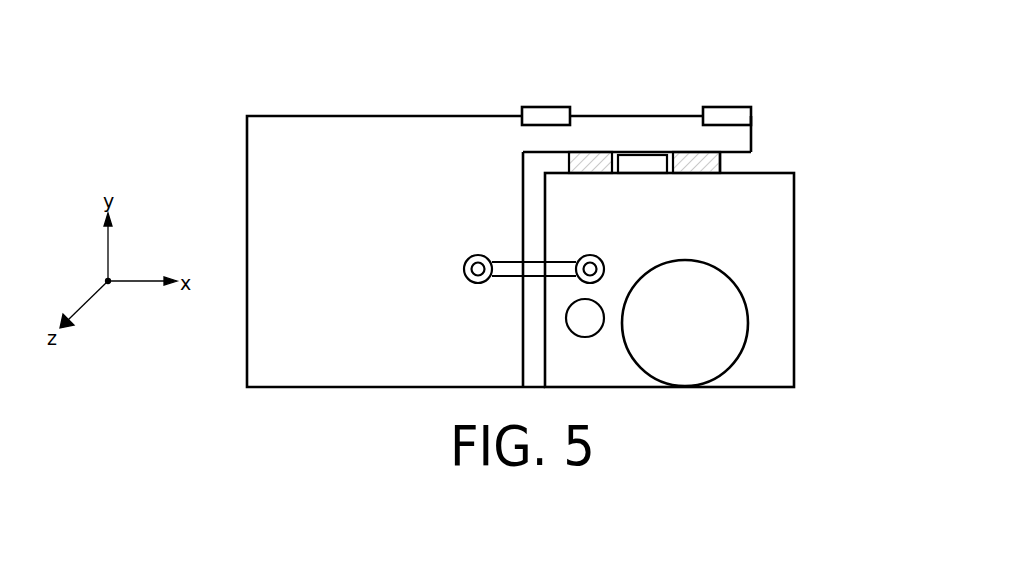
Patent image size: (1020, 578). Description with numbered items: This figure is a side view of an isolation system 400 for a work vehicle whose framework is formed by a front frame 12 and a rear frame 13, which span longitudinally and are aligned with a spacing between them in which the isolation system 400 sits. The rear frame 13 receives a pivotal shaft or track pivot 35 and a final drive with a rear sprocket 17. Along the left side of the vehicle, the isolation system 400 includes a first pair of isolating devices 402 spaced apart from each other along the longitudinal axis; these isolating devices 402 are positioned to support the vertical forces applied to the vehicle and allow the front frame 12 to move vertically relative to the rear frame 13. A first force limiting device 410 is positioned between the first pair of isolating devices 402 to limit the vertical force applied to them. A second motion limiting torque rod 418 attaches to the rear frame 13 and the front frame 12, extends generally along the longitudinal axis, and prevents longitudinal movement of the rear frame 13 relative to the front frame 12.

The front frame 12 is at (268, 210).
The rear frame 13 is at (778, 367).
The rear sprocket 17 is at (682, 365).
The track pivot 35 is at (585, 322).
The isolation system 400 is at (796, 112).
The first pair of isolating devices 402 is at (590, 162).
The first force limiting device 410 is at (641, 162).
The second motion limiting torque rod 418 is at (508, 270).